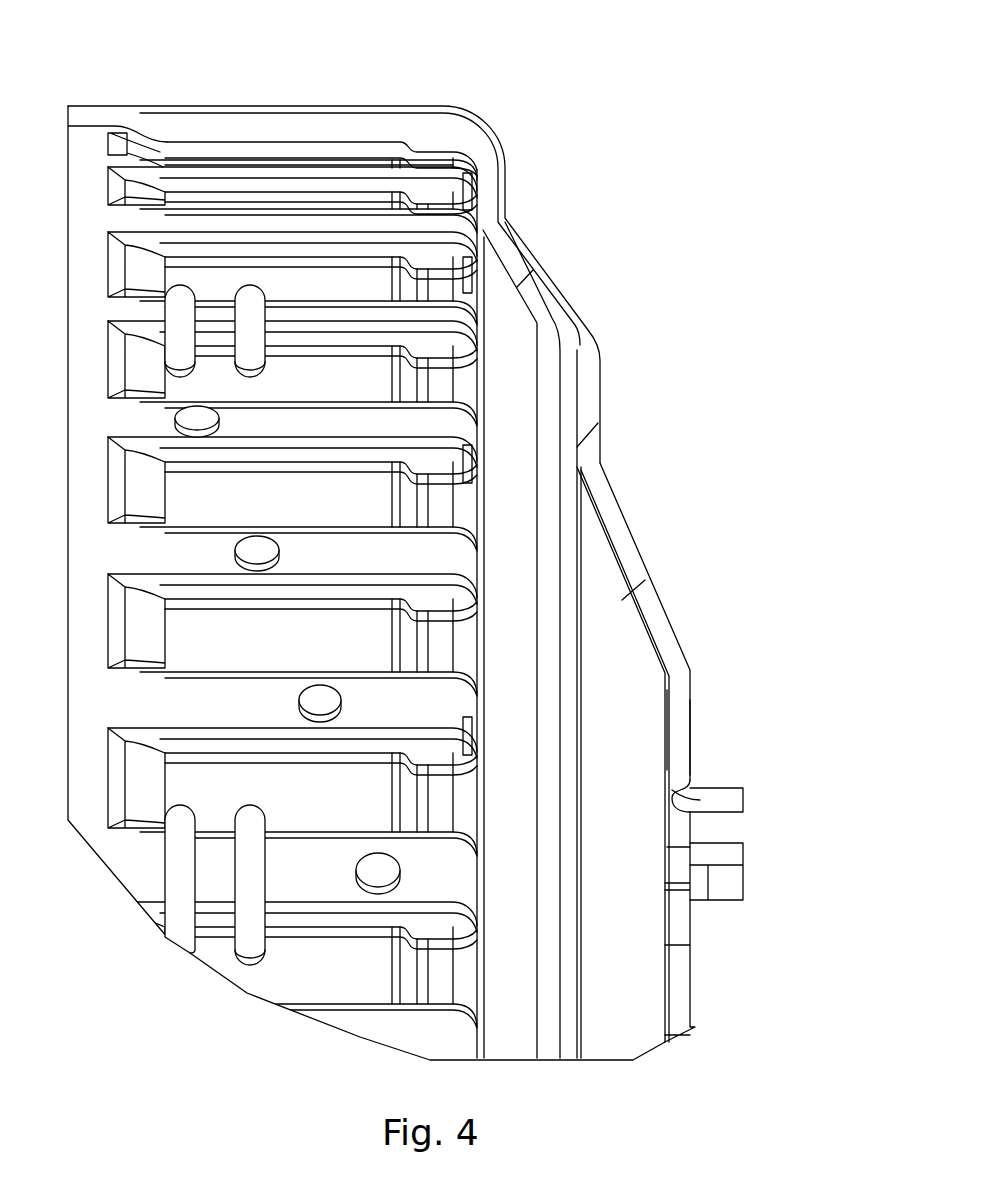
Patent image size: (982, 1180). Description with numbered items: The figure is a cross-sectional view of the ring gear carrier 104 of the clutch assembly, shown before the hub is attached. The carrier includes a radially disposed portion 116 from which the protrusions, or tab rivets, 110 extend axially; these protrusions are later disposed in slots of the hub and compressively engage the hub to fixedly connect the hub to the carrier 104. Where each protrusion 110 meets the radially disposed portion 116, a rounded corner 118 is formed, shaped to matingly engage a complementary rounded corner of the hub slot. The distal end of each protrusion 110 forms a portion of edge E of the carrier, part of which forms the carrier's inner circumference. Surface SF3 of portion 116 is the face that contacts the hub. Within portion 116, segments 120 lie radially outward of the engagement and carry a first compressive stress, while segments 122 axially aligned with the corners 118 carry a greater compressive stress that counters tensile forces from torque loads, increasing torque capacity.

The ring gear carrier 104 is at (253, 106).
The radially disposed portion 116 is at (695, 692).
The segments of portion 116 120 is at (680, 745).
The surface SF3 is at (692, 742).
The rounded corners 118 is at (697, 780).
The segments of portion 116 122 is at (688, 792).
The protrusions 110 is at (720, 815).
The edge E is at (678, 885).